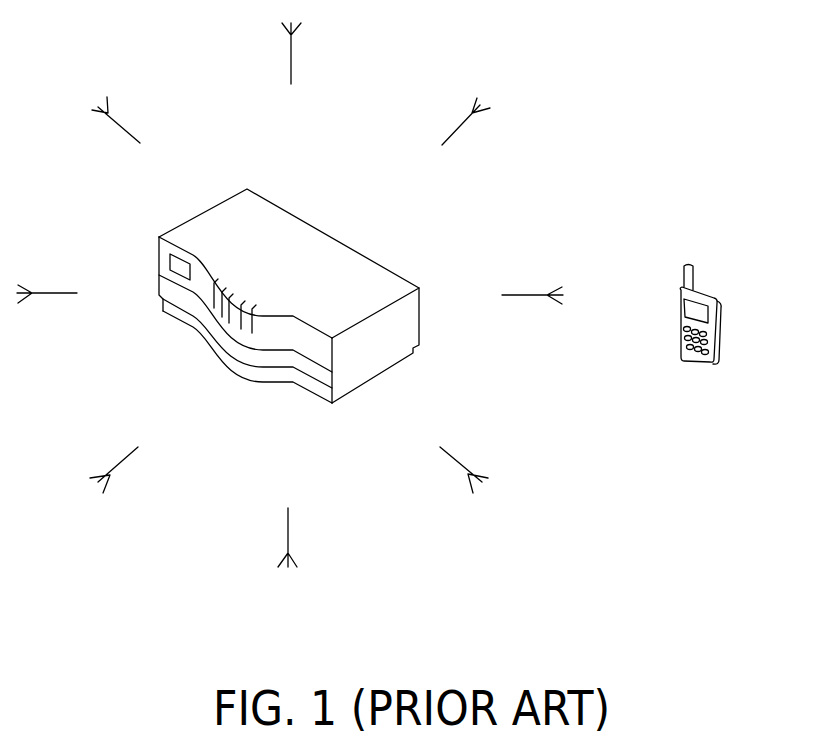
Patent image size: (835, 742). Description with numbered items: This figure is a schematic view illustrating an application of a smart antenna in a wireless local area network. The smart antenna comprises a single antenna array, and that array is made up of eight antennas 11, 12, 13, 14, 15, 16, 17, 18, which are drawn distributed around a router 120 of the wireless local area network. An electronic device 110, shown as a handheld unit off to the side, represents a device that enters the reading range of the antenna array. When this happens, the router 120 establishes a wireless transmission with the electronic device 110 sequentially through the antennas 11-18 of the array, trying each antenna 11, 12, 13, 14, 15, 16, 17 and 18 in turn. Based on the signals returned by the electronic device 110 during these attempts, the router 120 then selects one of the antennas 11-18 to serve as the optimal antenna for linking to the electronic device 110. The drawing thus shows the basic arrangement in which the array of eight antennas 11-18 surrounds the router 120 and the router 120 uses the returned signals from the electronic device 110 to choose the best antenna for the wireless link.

The antenna 11 is at (291, 67).
The antenna 12 is at (452, 130).
The antenna 13 is at (523, 293).
The antenna 14 is at (450, 458).
The antenna 15 is at (288, 525).
The antenna 16 is at (128, 457).
The antenna 17 is at (53, 293).
The antenna 18 is at (132, 130).
The electronic device 110 is at (725, 318).
The router 120 is at (335, 235).